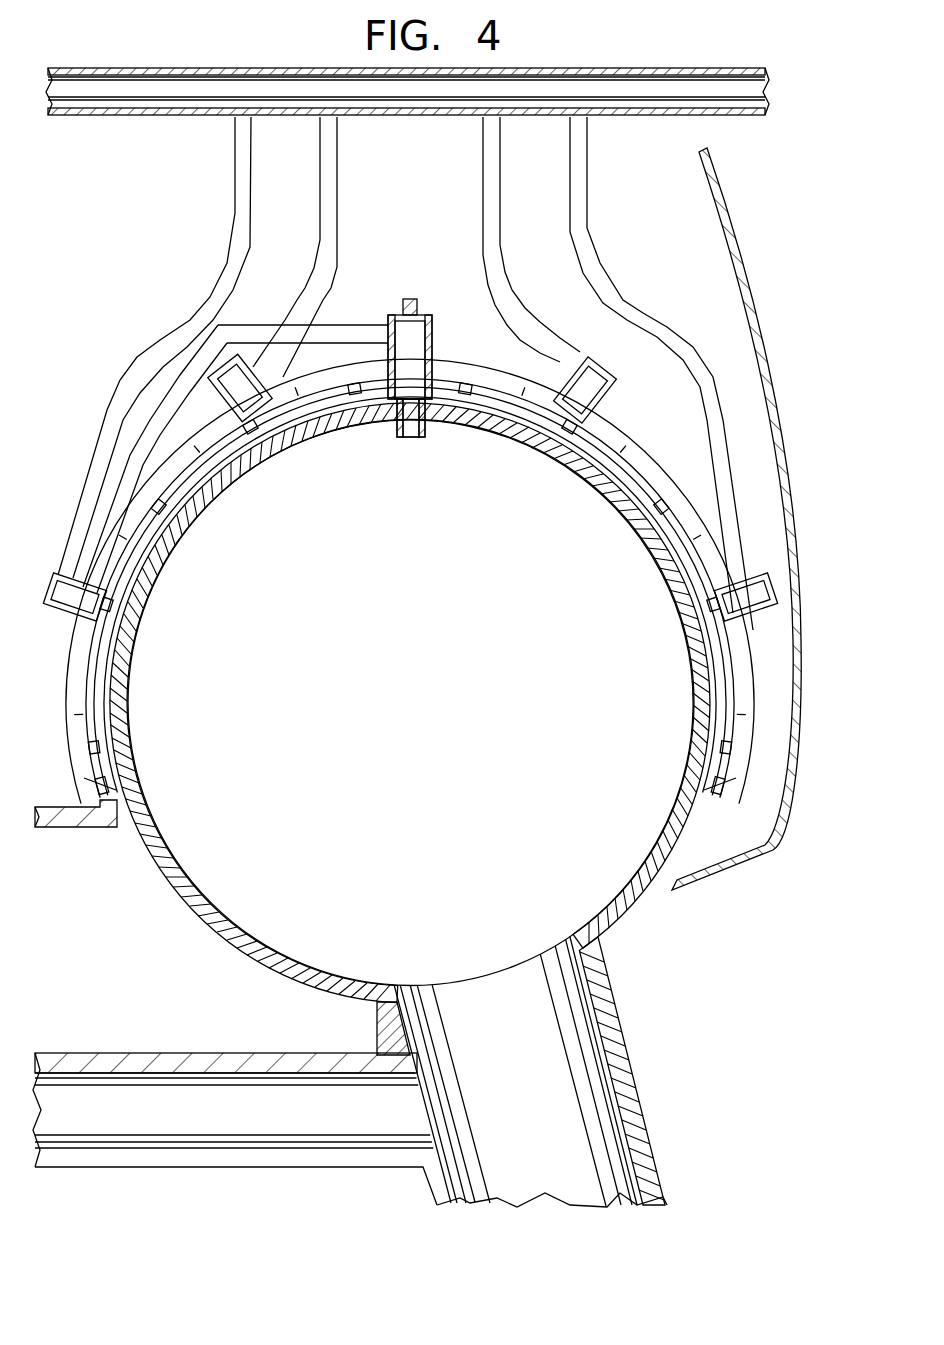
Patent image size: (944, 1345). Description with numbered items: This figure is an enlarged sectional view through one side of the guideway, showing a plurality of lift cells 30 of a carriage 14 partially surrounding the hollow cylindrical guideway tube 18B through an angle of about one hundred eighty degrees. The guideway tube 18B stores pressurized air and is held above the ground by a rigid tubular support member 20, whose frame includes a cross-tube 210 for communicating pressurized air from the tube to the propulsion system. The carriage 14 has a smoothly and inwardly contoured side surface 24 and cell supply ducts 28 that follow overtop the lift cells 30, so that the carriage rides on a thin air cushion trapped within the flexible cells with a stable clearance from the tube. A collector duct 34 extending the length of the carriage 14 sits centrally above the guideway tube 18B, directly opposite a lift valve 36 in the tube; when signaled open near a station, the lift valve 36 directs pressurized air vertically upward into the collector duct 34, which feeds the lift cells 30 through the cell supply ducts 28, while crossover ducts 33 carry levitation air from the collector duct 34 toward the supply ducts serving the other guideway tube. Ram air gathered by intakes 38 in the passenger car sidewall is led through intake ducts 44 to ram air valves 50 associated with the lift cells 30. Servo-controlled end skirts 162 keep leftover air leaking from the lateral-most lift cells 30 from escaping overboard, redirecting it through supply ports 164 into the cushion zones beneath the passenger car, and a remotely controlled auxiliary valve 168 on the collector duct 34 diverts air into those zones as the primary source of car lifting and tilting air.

The carriage 14 is at (94, 840).
The guideway tube 18B is at (232, 905).
The support member 20 is at (620, 1040).
The side surface 24 is at (737, 236).
The cell supply duct 28 is at (180, 443).
The lift cell 30 is at (233, 447).
The crossover duct 33 is at (280, 327).
The collector duct 34 is at (436, 335).
The lift valve 36 is at (396, 436).
The intake 38 is at (718, 117).
The intake duct 44 is at (232, 228).
The ram air valve 50 is at (216, 380).
The end skirt 162 is at (128, 797).
The supply port 164 is at (88, 753).
The auxiliary valve 168 is at (408, 306).
The cross-tube 210 is at (133, 1052).